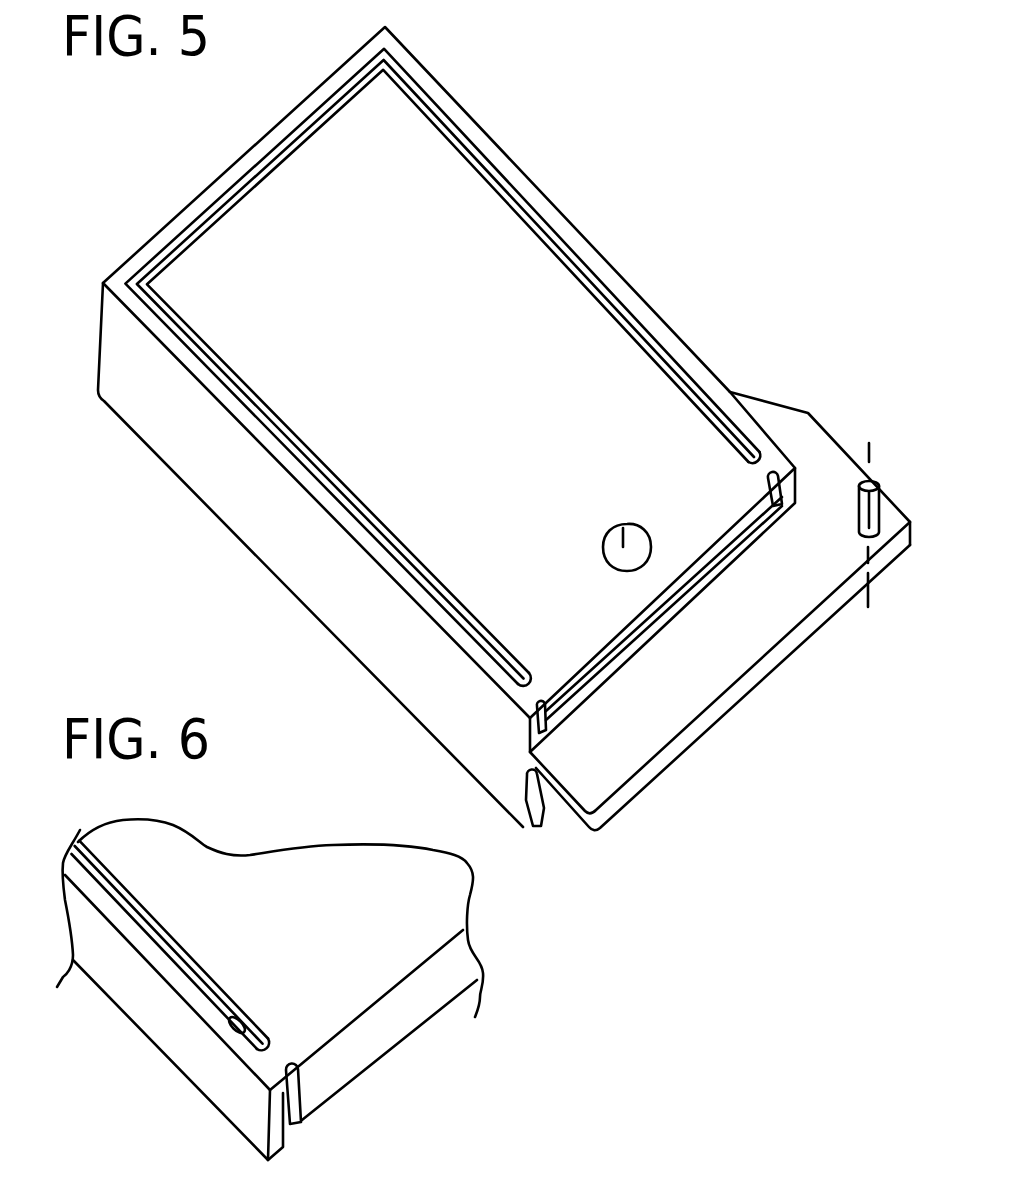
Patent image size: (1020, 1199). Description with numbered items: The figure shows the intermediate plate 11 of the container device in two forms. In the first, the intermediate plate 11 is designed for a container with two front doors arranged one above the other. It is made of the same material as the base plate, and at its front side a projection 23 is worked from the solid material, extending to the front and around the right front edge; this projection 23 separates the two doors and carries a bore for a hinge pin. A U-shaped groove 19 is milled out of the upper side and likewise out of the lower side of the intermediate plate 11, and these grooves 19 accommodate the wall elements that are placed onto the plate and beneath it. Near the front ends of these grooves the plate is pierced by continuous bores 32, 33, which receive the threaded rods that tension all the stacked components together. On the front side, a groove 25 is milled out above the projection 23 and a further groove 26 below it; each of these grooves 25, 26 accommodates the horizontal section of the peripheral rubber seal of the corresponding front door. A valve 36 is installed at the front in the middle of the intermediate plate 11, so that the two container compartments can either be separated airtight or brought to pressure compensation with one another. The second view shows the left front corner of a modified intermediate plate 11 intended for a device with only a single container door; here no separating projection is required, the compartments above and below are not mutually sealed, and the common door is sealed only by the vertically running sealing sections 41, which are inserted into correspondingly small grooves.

In FIG. 5, the intermediate plate 11 is at (482, 273).
In FIG. 6, the intermediate plate 11 is at (312, 956).
In FIG. 5, the U-shaped groove 19 is at (462, 137).
In FIG. 5, the projection 23 is at (748, 622).
In FIG. 5, the groove 25 is at (628, 648).
In FIG. 5, the groove 26 is at (538, 800).
In FIG. 5, the continuous bore 32 is at (518, 672).
In FIG. 5, the continuous bore 33 is at (746, 452).
In FIG. 5, the valve 36 is at (623, 525).
In FIG. 6, the vertically running sealing section 41 is at (303, 1097).